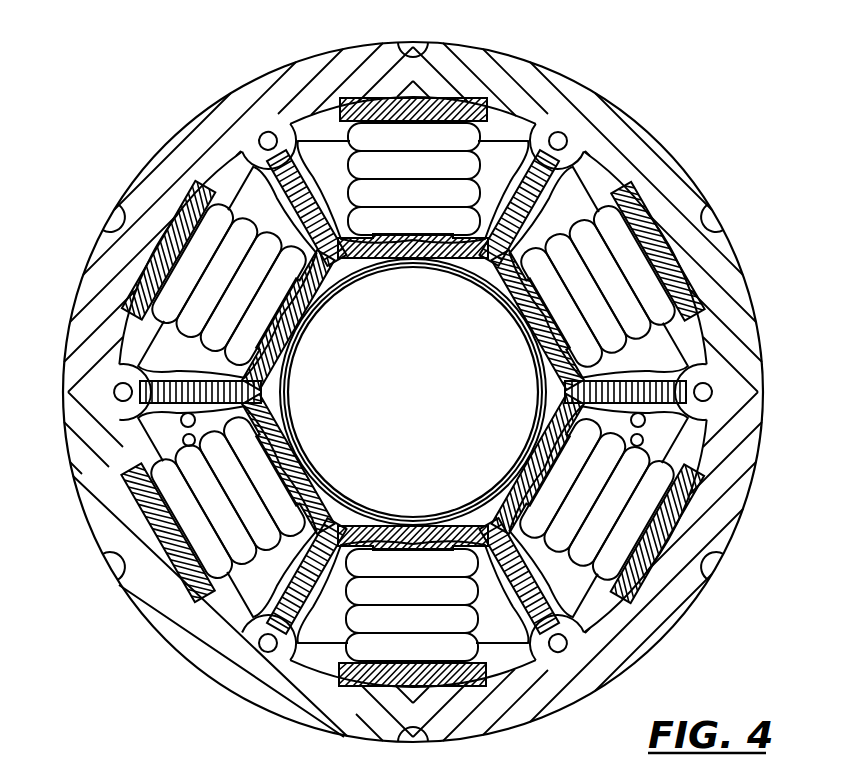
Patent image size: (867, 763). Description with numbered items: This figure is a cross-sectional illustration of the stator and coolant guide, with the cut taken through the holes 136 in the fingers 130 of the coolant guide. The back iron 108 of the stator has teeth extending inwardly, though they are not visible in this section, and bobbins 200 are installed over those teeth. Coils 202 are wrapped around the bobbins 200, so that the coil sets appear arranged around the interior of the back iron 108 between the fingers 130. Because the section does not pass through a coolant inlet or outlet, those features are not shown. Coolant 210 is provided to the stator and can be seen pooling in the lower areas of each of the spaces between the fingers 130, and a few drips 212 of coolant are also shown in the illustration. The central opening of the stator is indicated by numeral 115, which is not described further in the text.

The back iron 108 is at (540, 88).
The rotor bore 115 is at (505, 313).
The fingers 130 is at (558, 192).
The holes 136 is at (558, 184).
The bobbins 200 is at (374, 110).
The coils 202 is at (440, 133).
The coolant 210 is at (560, 217).
The drips 212 is at (645, 420).